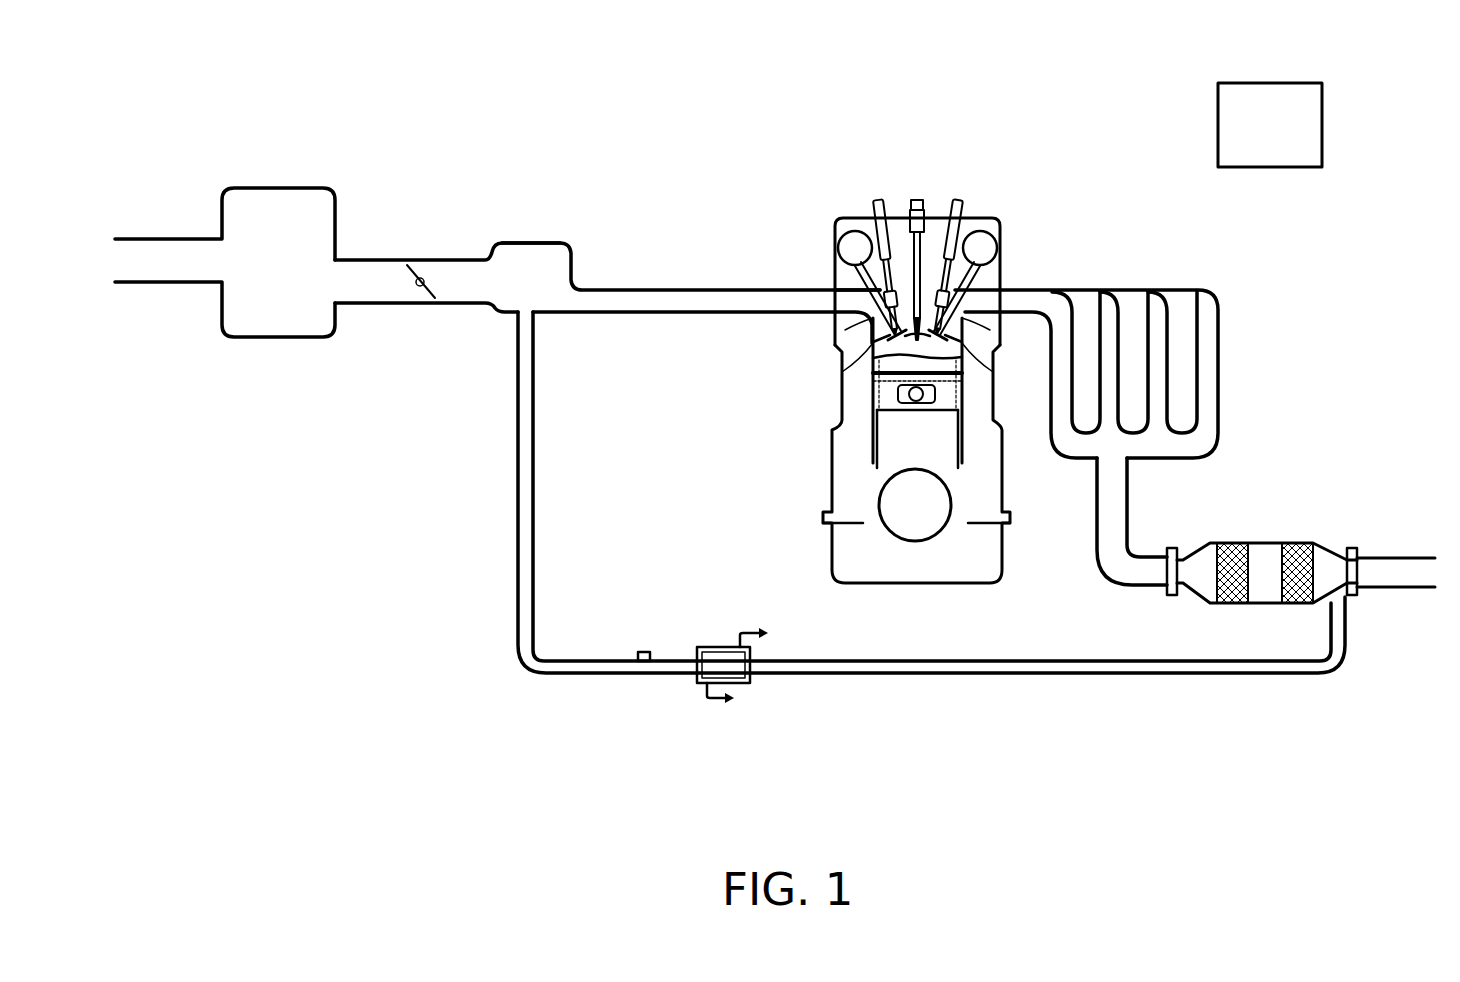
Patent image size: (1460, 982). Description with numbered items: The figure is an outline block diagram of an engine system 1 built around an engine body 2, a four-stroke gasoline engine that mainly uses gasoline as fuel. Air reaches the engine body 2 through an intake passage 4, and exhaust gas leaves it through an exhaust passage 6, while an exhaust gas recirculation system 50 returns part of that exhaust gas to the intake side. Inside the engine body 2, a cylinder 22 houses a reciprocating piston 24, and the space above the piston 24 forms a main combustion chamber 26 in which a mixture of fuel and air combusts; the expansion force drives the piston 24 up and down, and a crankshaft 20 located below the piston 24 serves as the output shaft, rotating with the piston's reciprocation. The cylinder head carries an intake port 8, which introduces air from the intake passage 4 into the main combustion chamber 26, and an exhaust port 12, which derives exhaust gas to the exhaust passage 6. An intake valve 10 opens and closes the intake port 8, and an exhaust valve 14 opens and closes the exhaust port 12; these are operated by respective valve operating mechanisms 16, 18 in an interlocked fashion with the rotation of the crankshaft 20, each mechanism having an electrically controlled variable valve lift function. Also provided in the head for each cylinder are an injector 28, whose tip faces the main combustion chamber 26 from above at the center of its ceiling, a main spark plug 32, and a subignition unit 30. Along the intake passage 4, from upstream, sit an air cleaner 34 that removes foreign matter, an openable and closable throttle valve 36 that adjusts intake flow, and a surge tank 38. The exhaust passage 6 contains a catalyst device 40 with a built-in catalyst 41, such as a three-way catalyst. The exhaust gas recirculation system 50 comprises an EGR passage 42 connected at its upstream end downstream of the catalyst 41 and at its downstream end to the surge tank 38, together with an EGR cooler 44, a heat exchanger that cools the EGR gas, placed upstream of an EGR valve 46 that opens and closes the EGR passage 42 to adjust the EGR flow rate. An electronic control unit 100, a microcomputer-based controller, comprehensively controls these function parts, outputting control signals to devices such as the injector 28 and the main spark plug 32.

The engine system 1 is at (610, 126).
The engine body 2 is at (955, 126).
The intake passage 4 is at (690, 290).
The exhaust passage 6 is at (1092, 292).
The intake port 8 is at (836, 288).
The intake valve 10 is at (838, 345).
The exhaust port 12 is at (1000, 290).
The exhaust valve 14 is at (994, 347).
The valve operating mechanism 16 is at (838, 218).
The valve operating mechanism 18 is at (1040, 193).
The crankshaft 20 is at (880, 495).
The cylinder 22 is at (878, 463).
The piston 24 is at (878, 398).
The main combustion chamber 26 is at (872, 355).
The injector 28 is at (917, 200).
The subignition unit 30 is at (960, 200).
The main spark plug 32 is at (876, 200).
The air cleaner 34 is at (272, 188).
The throttle valve 36 is at (420, 278).
The surge tank 38 is at (527, 243).
The catalyst device 40 is at (1318, 543).
The catalyst 41 is at (1293, 543).
The EGR passage 42 is at (1150, 677).
The EGR cooler 44 is at (745, 685).
The EGR valve 46 is at (645, 662).
The exhaust gas recirculation (EGR) system 50 is at (1029, 730).
The electronic control unit (ECU) 100 is at (1270, 83).